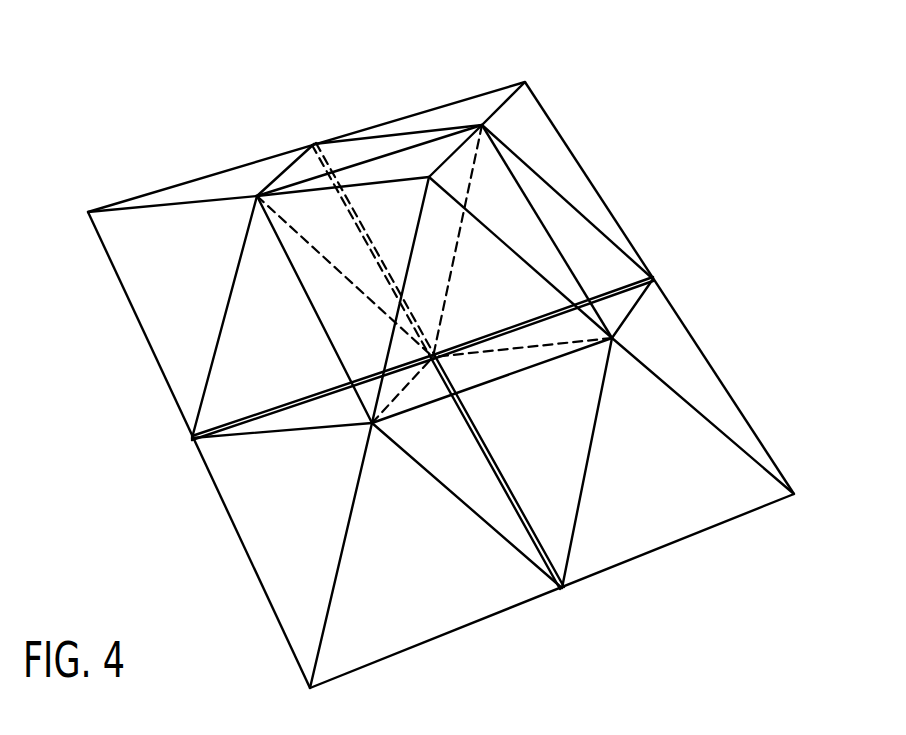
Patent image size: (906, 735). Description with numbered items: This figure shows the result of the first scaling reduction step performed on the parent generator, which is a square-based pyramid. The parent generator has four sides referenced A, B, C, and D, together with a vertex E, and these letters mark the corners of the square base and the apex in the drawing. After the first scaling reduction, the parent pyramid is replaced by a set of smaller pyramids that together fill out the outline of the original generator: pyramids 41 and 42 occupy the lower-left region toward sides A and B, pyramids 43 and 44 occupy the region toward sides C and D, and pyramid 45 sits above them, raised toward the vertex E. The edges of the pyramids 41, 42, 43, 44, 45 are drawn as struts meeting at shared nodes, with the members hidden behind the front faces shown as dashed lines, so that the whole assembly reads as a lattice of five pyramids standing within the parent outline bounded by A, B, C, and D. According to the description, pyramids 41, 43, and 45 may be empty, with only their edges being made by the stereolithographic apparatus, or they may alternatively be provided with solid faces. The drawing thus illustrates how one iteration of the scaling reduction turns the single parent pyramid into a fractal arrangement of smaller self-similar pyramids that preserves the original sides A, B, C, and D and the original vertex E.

The pyramid 41 is at (182, 318).
The pyramid 42 is at (288, 562).
The pyramid 43 is at (707, 390).
The pyramid 44 is at (538, 135).
The pyramid 45 is at (508, 213).
The side A is at (88, 212).
The side B is at (310, 688).
The side C is at (794, 494).
The side D is at (525, 82).
The vertex E is at (429, 177).